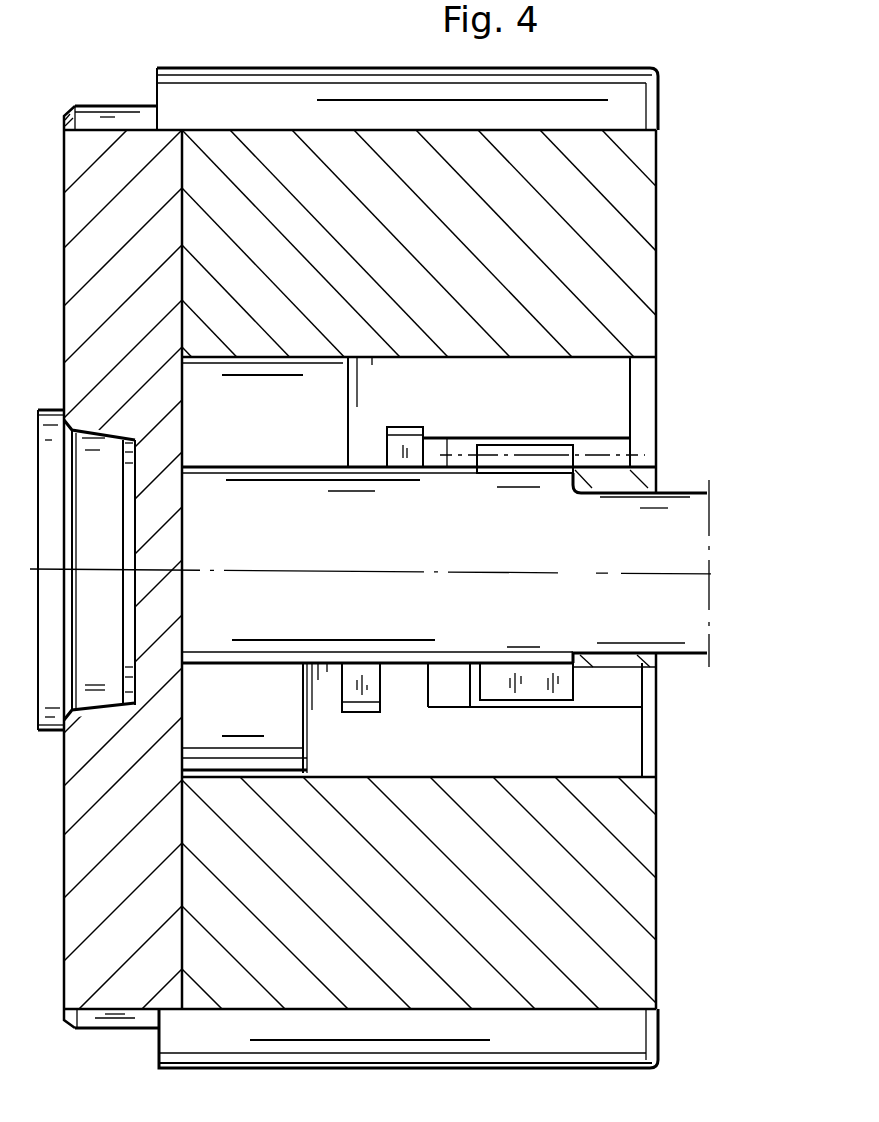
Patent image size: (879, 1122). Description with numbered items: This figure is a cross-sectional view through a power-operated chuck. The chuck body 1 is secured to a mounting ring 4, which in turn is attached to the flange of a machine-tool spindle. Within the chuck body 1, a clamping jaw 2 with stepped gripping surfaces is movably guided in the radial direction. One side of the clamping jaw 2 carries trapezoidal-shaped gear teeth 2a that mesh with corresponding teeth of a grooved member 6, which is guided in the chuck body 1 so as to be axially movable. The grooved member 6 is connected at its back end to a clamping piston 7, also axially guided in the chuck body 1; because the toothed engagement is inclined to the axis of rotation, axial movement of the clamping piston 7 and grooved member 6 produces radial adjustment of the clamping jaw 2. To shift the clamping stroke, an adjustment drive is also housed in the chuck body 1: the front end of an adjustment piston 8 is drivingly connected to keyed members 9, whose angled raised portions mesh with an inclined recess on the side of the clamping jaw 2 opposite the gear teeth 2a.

The chuck body 1 is at (213, 100).
The clamping jaw 2 is at (611, 558).
The trapezoidal-shaped gear teeth 2a is at (563, 462).
The mounting ring 4 is at (87, 162).
The grooved member 6 is at (605, 397).
The clamping piston 7 is at (412, 458).
The adjustment piston 8 is at (365, 673).
The keyed member 9 is at (618, 737).